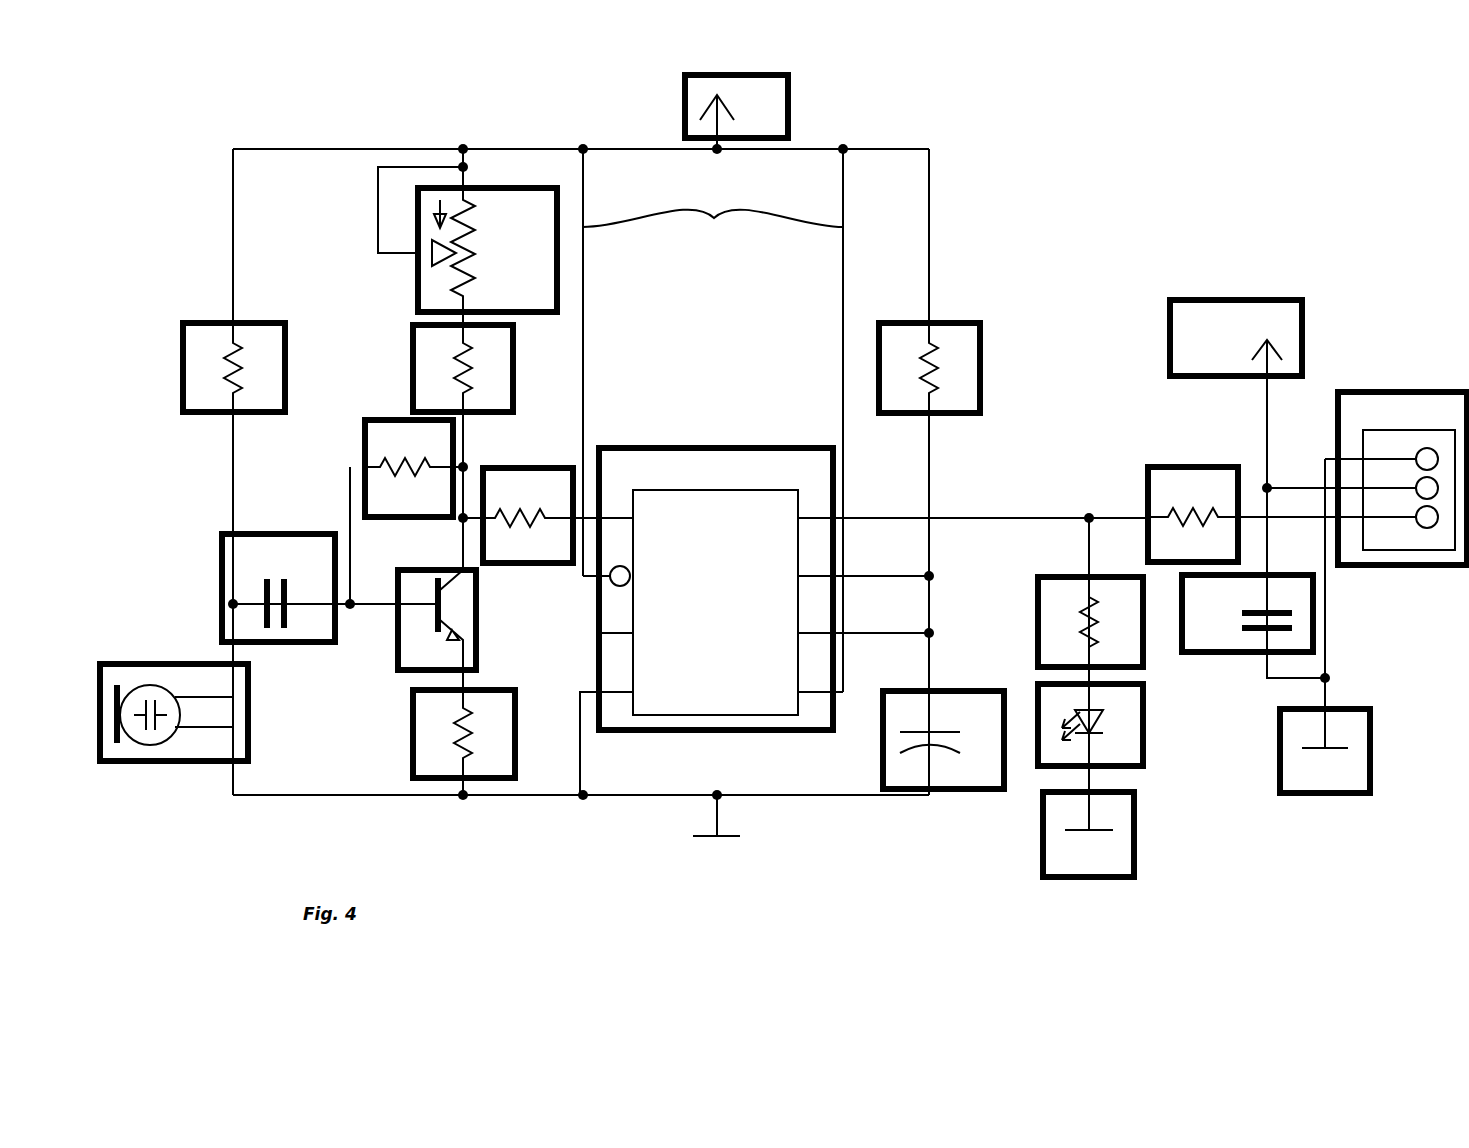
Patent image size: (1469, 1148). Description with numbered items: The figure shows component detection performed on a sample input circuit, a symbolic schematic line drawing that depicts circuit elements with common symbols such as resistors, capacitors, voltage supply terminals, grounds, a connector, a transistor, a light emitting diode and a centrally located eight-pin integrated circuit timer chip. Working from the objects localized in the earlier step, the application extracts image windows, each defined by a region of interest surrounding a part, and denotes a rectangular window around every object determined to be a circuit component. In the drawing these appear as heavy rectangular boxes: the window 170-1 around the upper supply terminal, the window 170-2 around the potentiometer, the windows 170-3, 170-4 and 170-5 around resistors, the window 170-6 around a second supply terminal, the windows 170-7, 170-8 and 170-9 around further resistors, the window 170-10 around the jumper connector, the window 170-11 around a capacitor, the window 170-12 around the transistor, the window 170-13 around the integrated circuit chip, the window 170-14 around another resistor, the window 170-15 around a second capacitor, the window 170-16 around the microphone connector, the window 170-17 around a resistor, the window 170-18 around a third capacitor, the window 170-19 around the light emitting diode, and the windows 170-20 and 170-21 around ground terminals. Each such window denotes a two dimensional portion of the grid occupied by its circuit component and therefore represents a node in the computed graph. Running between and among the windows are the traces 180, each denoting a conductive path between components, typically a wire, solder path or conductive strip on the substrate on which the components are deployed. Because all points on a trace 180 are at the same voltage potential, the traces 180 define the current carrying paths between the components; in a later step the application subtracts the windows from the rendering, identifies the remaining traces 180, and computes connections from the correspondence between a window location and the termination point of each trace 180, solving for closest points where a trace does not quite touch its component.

The trace 180 is at (300, 149).
The rectangular window 170-1 is at (788, 105).
The rectangular window 170-2 is at (418, 281).
The rectangular window 170-3 is at (195, 323).
The rectangular window 170-4 is at (413, 340).
The rectangular window 170-5 is at (960, 323).
The rectangular window 170-6 is at (1200, 300).
The rectangular window 170-7 is at (390, 420).
The rectangular window 170-8 is at (545, 468).
The rectangular window 170-9 is at (1163, 467).
The rectangular window 170-10 is at (1412, 392).
The rectangular window 170-11 is at (225, 540).
The rectangular window 170-12 is at (476, 608).
The rectangular window 170-13 is at (750, 490).
The rectangular window 170-14 is at (1073, 577).
The rectangular window 170-15 is at (1203, 652).
The rectangular window 170-16 is at (140, 664).
The rectangular window 170-17 is at (413, 722).
The rectangular window 170-18 is at (883, 768).
The rectangular window 170-19 is at (1143, 758).
The rectangular window 170-20 is at (1330, 793).
The rectangular window 170-21 is at (1043, 850).